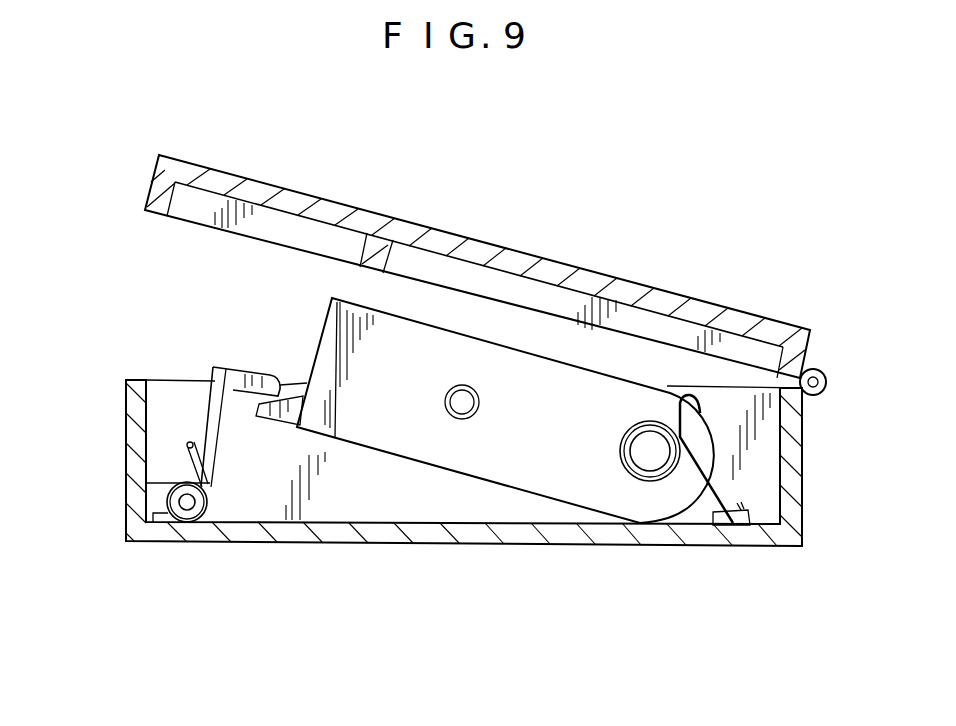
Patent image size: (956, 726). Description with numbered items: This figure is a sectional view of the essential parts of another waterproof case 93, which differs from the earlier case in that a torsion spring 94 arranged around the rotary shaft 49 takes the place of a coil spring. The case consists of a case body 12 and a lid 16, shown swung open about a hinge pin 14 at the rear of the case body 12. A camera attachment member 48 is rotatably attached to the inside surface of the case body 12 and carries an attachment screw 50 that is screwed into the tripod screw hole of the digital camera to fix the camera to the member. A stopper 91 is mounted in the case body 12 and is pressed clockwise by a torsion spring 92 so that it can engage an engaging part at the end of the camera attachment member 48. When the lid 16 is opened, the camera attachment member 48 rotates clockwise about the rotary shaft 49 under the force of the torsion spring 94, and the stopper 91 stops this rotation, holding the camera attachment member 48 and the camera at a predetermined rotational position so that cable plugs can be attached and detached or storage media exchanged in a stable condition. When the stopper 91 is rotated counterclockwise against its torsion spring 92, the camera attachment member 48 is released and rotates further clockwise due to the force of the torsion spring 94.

The case body 12 is at (124, 427).
The hinge pin 14 is at (827, 381).
The lid 16 is at (290, 189).
The camera attachment member 48 is at (497, 487).
The rotary shaft 49 is at (648, 452).
The attachment screw 50 is at (449, 422).
The stopper 91 is at (217, 366).
The torsion spring 92 is at (190, 446).
The waterproof case 93 is at (636, 151).
The torsion spring 94 is at (690, 487).